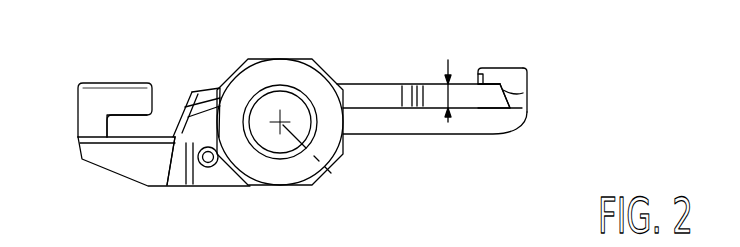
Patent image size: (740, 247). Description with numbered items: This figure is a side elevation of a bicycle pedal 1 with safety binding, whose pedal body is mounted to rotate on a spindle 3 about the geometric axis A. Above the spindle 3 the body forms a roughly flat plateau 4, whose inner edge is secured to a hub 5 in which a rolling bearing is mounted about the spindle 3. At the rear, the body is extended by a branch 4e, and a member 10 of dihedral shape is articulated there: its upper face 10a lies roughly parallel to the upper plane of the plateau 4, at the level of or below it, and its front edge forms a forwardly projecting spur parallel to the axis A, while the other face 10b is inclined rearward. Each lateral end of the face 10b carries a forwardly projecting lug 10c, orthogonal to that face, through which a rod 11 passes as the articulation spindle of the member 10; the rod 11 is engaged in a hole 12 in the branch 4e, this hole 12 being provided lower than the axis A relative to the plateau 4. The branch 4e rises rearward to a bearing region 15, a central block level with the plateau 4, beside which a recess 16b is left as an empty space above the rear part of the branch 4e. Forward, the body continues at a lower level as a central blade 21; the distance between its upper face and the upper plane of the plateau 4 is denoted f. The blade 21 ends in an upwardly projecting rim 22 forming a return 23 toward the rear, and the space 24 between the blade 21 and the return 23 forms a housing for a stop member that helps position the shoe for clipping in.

The bicycle pedal 1 is at (556, 48).
The spindle 3 is at (273, 102).
The plateau 4 is at (370, 84).
The branch 4e is at (143, 167).
The hub 5 is at (303, 80).
The member 10 is at (185, 80).
The upper face 10a is at (207, 91).
The face 10b is at (175, 107).
The lug 10c is at (170, 170).
The rod 11 is at (211, 168).
The hole 12 is at (193, 192).
The bearing region 15 is at (105, 88).
The recess 16b is at (128, 125).
The central blade 21 is at (423, 123).
The rim 22 is at (519, 100).
The return 23 is at (493, 70).
The space 24 is at (493, 97).
The geometric axis A is at (325, 167).
The distance f is at (455, 90).